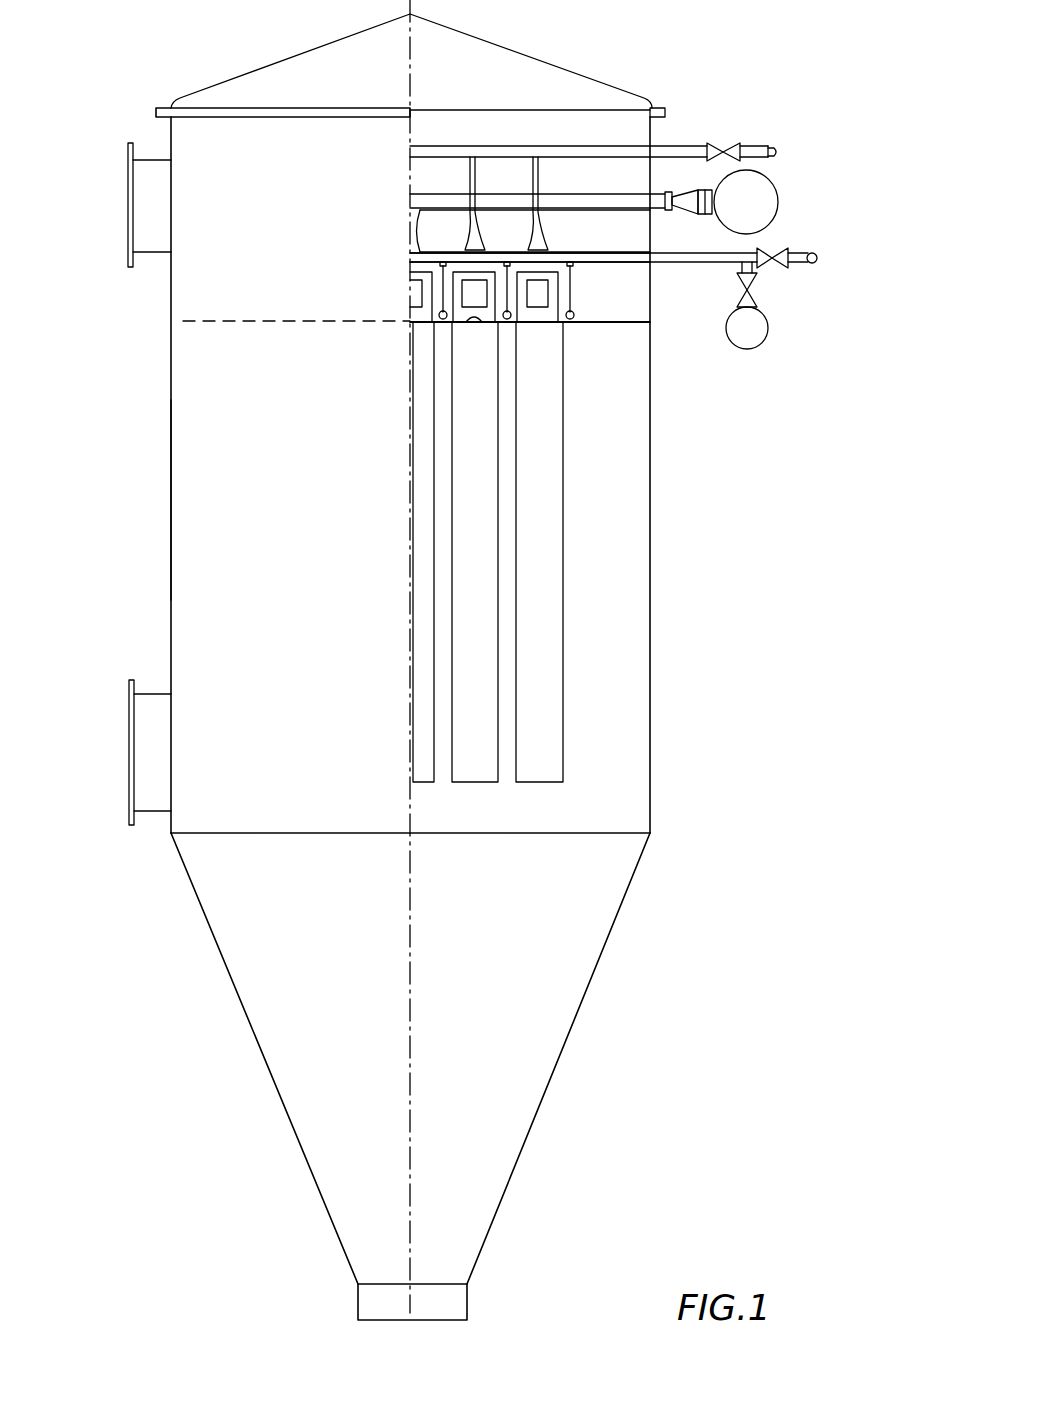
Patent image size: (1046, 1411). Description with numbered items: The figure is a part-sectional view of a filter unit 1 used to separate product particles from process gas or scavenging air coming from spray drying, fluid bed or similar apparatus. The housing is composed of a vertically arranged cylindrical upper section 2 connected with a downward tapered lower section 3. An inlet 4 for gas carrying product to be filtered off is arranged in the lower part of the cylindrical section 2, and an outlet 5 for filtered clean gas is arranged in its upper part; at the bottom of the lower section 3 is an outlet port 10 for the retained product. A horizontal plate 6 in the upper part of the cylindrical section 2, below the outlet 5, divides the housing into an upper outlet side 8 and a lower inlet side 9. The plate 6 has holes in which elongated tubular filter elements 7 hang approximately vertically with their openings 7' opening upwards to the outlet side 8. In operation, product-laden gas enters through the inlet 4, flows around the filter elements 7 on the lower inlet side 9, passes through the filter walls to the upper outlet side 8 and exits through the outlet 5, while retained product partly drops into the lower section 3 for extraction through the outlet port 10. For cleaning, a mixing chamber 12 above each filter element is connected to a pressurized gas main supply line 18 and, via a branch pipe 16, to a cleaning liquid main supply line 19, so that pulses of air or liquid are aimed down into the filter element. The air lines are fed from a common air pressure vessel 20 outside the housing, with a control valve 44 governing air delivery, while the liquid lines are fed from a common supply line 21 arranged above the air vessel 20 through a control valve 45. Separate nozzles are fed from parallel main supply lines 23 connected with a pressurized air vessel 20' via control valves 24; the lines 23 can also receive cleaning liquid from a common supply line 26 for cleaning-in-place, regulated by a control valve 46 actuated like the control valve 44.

The filter unit 1 is at (663, 577).
The cylindrical upper section 2 is at (653, 657).
The downward tapered lower section 3 is at (530, 1132).
The inlet 4 is at (129, 752).
The outlet 5 is at (127, 198).
The horizontal plate 6 is at (585, 323).
The tubular filter elements 7 is at (510, 552).
The openings 7' is at (492, 327).
The upper outlet side 8 is at (167, 300).
The lower inlet side 9 is at (165, 515).
The outlet port 10 is at (455, 1320).
The mixing chamber 12 is at (468, 240).
The branch pipe 16 is at (472, 178).
The pressurized gas main supply line 18 is at (617, 205).
The cleaning liquid main supply line 19 is at (678, 148).
The air pressure vessel 20 is at (780, 202).
The pressurized air vessel 20' is at (766, 353).
The common supply line 21 is at (775, 152).
The main supply lines 23 is at (672, 258).
The control valves 24 is at (750, 280).
The common supply line 26 is at (814, 264).
The control valve 44 is at (673, 208).
The control valve 45 is at (737, 145).
The control valve 46 is at (783, 247).